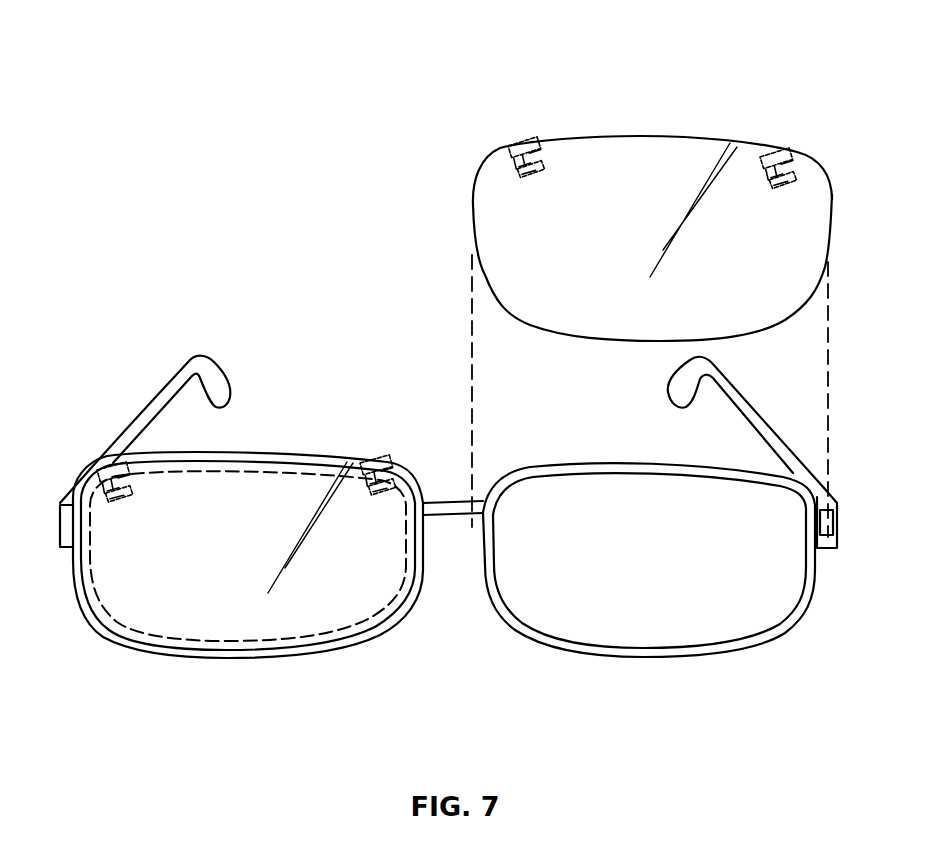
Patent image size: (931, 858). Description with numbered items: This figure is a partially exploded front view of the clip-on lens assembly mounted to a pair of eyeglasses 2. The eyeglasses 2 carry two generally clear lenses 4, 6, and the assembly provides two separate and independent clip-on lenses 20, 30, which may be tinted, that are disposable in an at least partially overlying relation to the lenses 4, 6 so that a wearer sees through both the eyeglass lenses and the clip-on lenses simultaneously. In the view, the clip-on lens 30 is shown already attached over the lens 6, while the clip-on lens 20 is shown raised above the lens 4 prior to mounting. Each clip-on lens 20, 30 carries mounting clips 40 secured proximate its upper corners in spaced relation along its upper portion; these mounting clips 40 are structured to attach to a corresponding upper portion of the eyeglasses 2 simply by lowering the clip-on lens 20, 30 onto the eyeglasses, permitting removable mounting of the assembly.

The eyeglasses 2 is at (136, 386).
The lens of the eyeglasses 4 is at (665, 555).
The lens of the eyeglasses 6 is at (220, 625).
The clip-on lens 20 is at (667, 137).
The clip-on lens 30 is at (262, 453).
The mounting clip 40 is at (520, 137).